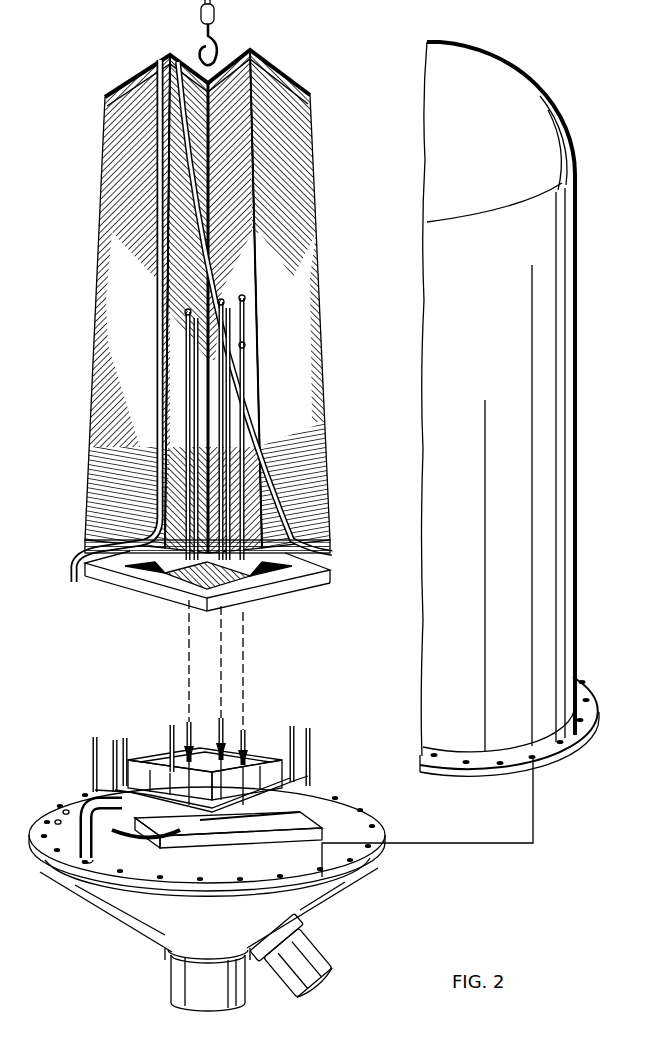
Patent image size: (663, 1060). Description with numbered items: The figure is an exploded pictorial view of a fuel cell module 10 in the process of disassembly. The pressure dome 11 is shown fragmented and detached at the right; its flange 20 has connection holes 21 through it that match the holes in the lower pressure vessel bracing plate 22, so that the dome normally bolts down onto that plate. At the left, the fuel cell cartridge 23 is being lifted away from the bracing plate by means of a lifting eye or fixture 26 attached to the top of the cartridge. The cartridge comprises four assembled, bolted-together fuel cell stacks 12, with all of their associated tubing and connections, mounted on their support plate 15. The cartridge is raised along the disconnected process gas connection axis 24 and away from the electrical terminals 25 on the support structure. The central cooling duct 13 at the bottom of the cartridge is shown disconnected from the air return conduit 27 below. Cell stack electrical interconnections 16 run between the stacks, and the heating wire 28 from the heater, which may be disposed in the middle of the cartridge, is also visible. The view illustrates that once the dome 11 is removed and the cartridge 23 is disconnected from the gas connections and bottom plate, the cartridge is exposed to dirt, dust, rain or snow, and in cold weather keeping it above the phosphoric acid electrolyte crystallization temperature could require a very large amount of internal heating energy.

The fuel cell module 10 is at (198, 372).
The pressure dome 11 is at (533, 102).
The fuel cell stacks 12 is at (122, 303).
The central cooling duct 13 is at (203, 593).
The support plate 15 is at (133, 567).
The cell stack electrical interconnections 16 is at (240, 377).
The flange 20 is at (520, 726).
The connection holes 21 is at (500, 747).
The lower pressure vessel bracing plate 22 is at (232, 887).
The fuel cell cartridge 23 is at (118, 110).
The process gas connection axis 24 is at (242, 659).
The electrical terminals 25 is at (56, 818).
The lifting eye or fixture 26 is at (222, 52).
The air return conduit 27 is at (183, 988).
The heating wire 28 is at (182, 57).